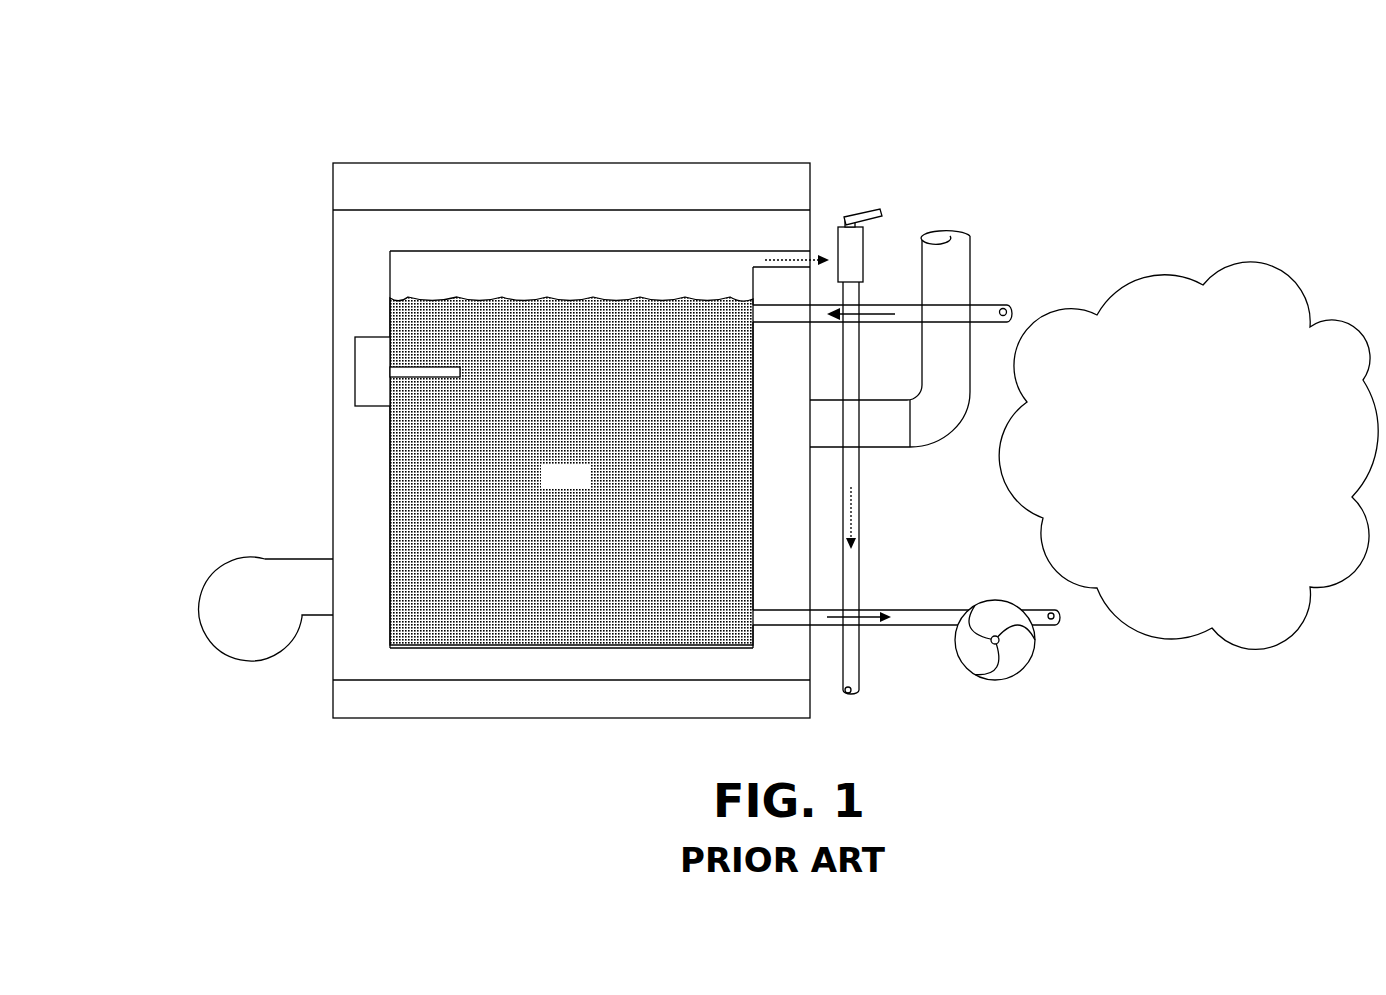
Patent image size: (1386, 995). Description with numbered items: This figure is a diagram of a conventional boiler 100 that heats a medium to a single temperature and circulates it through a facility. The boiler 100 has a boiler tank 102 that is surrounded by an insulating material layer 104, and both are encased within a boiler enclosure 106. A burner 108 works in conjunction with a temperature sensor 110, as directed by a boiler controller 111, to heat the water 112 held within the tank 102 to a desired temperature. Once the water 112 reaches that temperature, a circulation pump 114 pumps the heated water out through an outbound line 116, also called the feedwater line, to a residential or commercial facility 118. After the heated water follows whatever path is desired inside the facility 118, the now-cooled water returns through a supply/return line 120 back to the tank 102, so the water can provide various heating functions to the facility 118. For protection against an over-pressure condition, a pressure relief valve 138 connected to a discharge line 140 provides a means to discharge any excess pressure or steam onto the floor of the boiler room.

The boiler 100 is at (262, 70).
The boiler tank 102 is at (435, 251).
The insulating material layer 104 is at (380, 500).
The boiler enclosure 106 is at (353, 163).
The burner 108 is at (208, 584).
The temperature sensor 110 is at (435, 367).
The boiler controller 111 is at (355, 373).
The water 112 is at (585, 486).
The circulation pump 114 is at (992, 680).
The outbound line 116 is at (893, 608).
The facility 118 is at (1172, 477).
The supply/return line 120 is at (987, 305).
The pressure relief valve 138 is at (853, 213).
The discharge line 140 is at (860, 515).